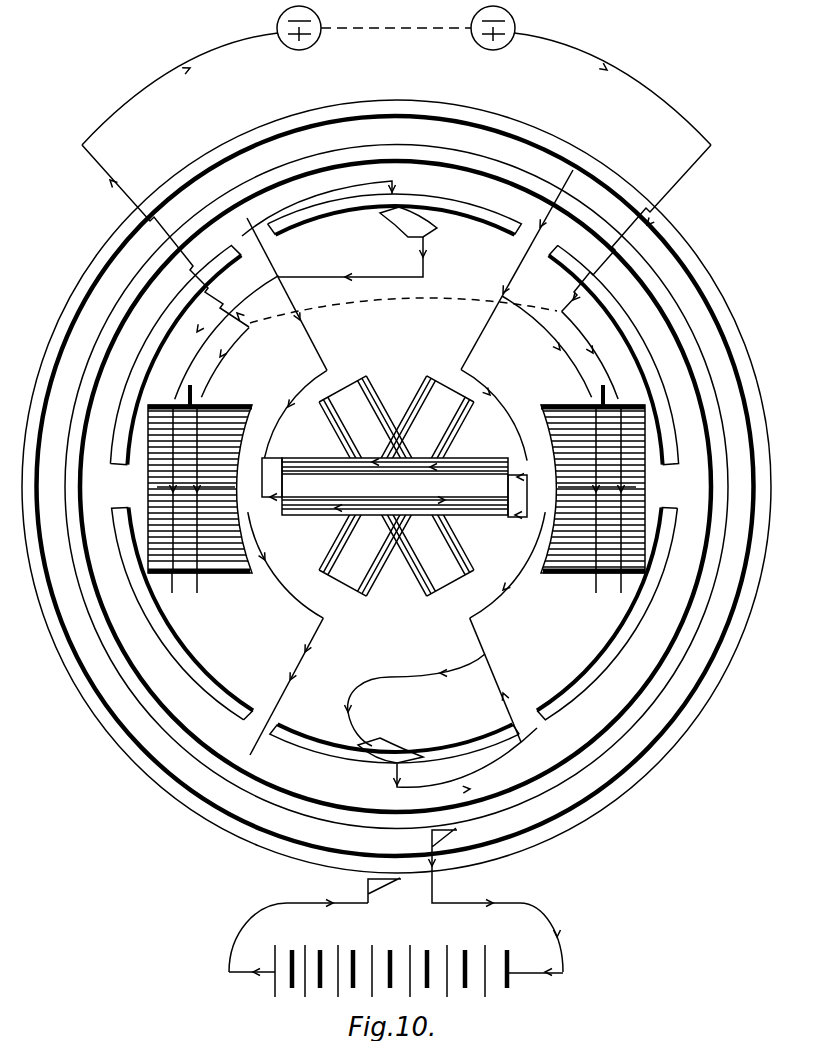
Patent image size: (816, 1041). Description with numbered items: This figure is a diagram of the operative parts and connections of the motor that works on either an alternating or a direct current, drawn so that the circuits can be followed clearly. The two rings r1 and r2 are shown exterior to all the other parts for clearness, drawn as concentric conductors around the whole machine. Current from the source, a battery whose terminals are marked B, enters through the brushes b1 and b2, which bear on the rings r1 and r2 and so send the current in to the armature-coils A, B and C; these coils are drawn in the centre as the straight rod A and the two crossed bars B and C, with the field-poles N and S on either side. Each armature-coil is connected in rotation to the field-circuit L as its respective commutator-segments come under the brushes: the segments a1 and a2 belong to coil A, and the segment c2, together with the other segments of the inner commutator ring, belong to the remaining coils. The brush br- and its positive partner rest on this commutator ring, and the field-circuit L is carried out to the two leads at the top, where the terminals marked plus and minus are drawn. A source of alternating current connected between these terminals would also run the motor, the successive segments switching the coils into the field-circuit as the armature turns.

The ring r1 is at (396, 486).
The ring r2 is at (395, 495).
The commutator-segment c2 is at (398, 486).
The commutator-segment a1 is at (381, 208).
The commutator-segment a2 is at (403, 758).
The brush br- is at (415, 708).
The field-circuit L is at (396, 166).
The north field-pole N is at (204, 489).
The south field-pole S is at (591, 489).
The armature-coil A is at (394, 488).
The armature-coil B is at (396, 686).
The armature-coil C is at (396, 486).
The brush b1 is at (315, 927).
The brush b2 is at (496, 901).